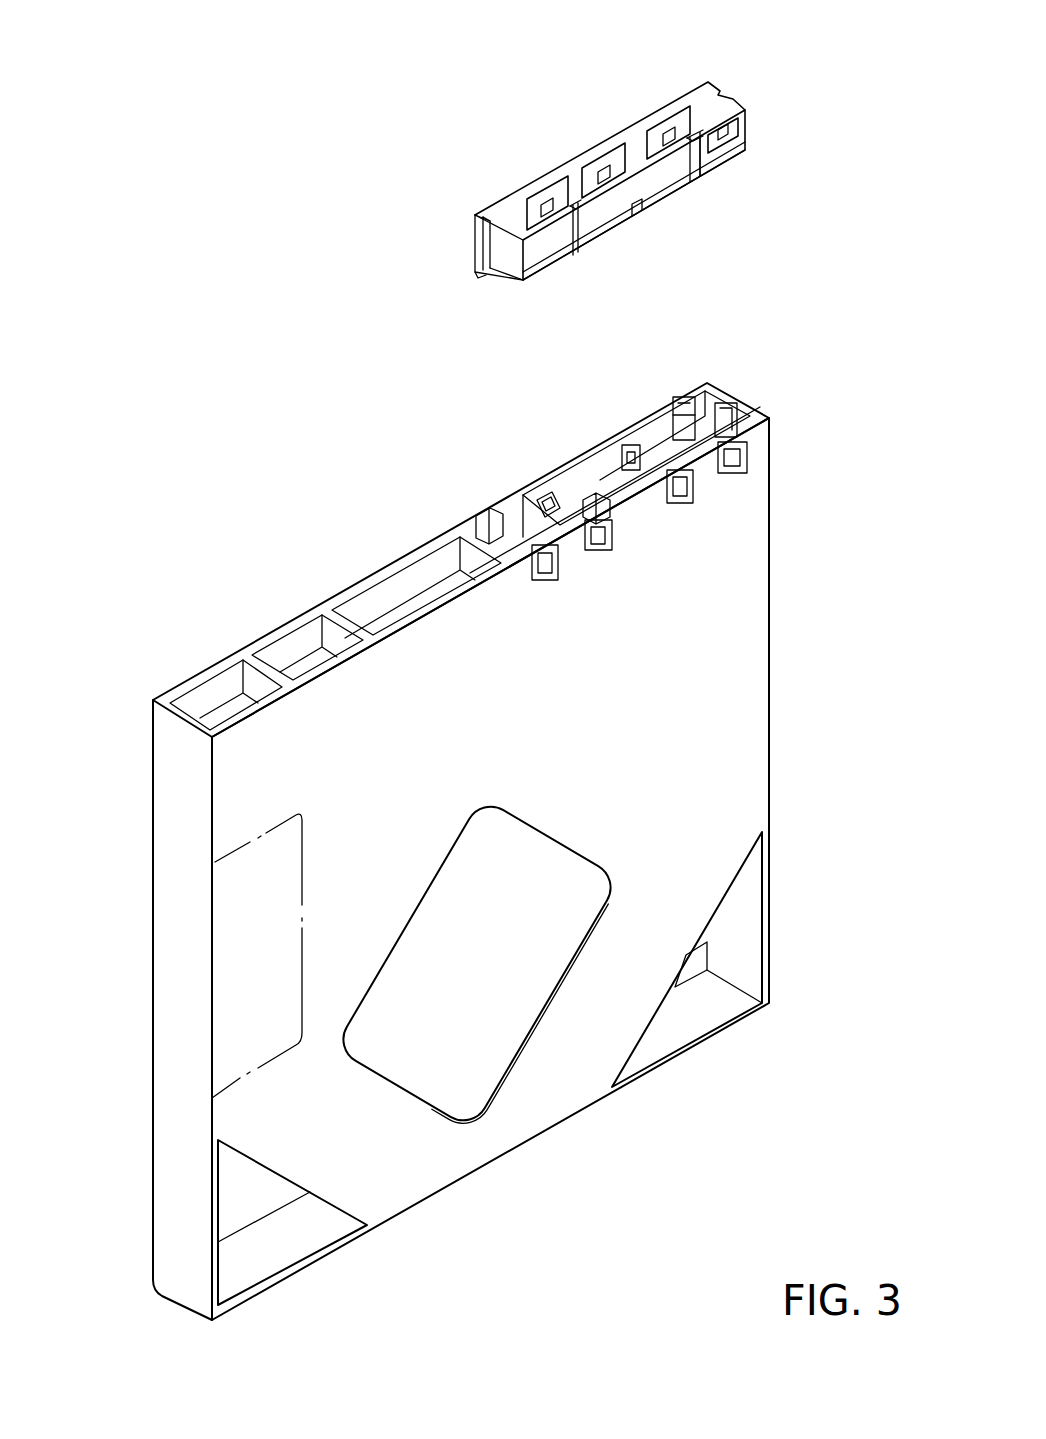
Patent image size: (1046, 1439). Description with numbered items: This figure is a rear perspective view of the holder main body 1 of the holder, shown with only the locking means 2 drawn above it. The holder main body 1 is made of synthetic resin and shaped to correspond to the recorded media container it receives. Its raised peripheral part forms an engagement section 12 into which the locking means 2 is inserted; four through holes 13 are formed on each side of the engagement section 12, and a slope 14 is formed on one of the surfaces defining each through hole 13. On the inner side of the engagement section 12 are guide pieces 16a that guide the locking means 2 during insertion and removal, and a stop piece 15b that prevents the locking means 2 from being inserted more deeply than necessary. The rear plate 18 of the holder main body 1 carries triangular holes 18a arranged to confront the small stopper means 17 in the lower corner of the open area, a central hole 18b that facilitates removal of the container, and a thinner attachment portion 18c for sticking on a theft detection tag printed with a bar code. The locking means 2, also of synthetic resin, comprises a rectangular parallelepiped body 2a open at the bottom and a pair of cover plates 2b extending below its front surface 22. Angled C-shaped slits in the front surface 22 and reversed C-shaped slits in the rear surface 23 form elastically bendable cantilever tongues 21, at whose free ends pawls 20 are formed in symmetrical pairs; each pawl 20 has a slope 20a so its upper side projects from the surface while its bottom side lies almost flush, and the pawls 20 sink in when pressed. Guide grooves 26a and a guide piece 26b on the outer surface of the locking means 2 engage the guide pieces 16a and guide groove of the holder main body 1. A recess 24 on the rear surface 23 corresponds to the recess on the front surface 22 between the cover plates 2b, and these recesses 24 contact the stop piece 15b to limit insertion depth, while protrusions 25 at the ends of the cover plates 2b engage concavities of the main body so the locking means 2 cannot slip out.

The holder main body 1 is at (776, 659).
The locking means 2 is at (248, 183).
The rectangular parallelepiped body 2a is at (490, 207).
The cover plates 2b is at (476, 280).
The engagement section 12 is at (527, 493).
The through holes 13 is at (550, 493).
The slope 14 is at (683, 408).
The stop piece 15b is at (596, 495).
The guide pieces 16a is at (693, 430).
The stopper means 17 is at (700, 967).
The rear plate 18 is at (647, 755).
The triangular holes 18a is at (687, 1018).
The hole 18b is at (477, 1027).
The attachment portion 18c is at (235, 948).
The pawls 20 is at (527, 247).
The slope 20a is at (507, 225).
The tongues 21 is at (532, 240).
The front surface 22 is at (490, 200).
The rear surface 23 is at (523, 275).
The recess 24 is at (636, 218).
The protrusions 25 is at (478, 272).
The guide grooves 26a is at (720, 95).
The guide piece 26b is at (478, 247).